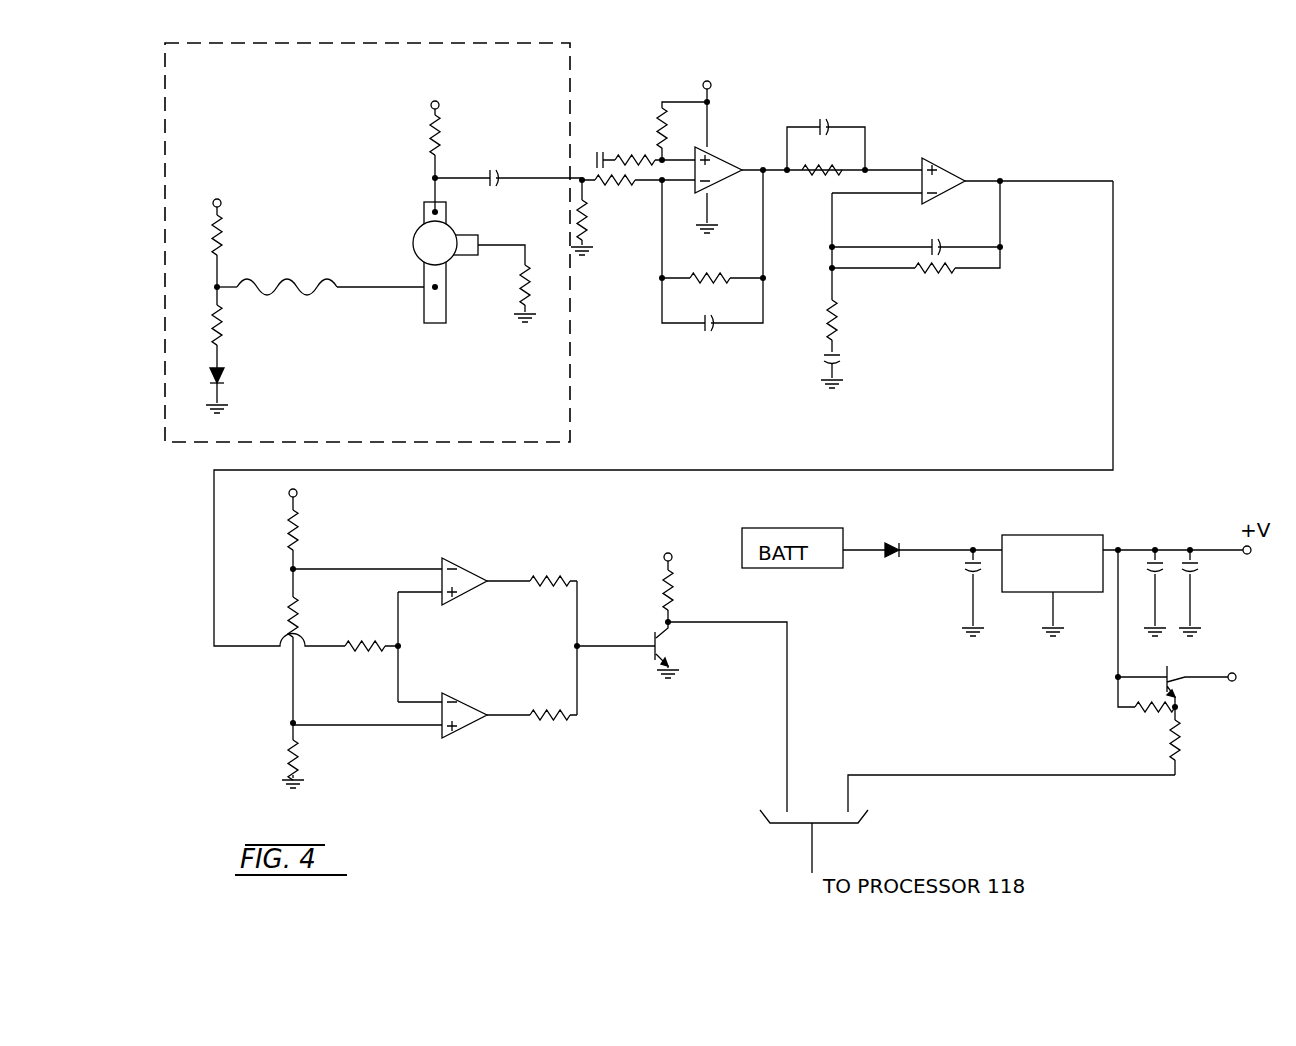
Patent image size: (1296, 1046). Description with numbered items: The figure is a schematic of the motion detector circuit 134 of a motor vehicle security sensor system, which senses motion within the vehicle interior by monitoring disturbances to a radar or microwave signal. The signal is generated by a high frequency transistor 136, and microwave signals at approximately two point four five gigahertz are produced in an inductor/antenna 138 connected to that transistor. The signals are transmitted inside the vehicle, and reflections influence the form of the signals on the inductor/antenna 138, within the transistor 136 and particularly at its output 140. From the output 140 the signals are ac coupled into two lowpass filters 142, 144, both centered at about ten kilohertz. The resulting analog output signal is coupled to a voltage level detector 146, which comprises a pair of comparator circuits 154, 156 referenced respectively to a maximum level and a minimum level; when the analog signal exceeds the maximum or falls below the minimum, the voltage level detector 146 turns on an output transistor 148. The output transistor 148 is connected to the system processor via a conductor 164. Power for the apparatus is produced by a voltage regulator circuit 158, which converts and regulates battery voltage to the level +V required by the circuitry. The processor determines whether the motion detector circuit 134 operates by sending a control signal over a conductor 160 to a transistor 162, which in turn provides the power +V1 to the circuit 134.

The motion detector circuit 134 is at (1107, 74).
The high frequency transistor 136 is at (413, 227).
The inductor/antenna 138 is at (314, 292).
The output 140 is at (444, 167).
The lowpass filter 142 is at (733, 131).
The lowpass filter 144 is at (901, 137).
The voltage level detector 146 is at (510, 654).
The output transistor 148 is at (669, 646).
The comparator circuit 154 is at (473, 558).
The comparator circuit 156 is at (467, 732).
The voltage regulator circuit 158 is at (1053, 535).
The conductor 160 is at (935, 775).
The transistor 162 is at (1186, 689).
The conductor 164 is at (787, 735).